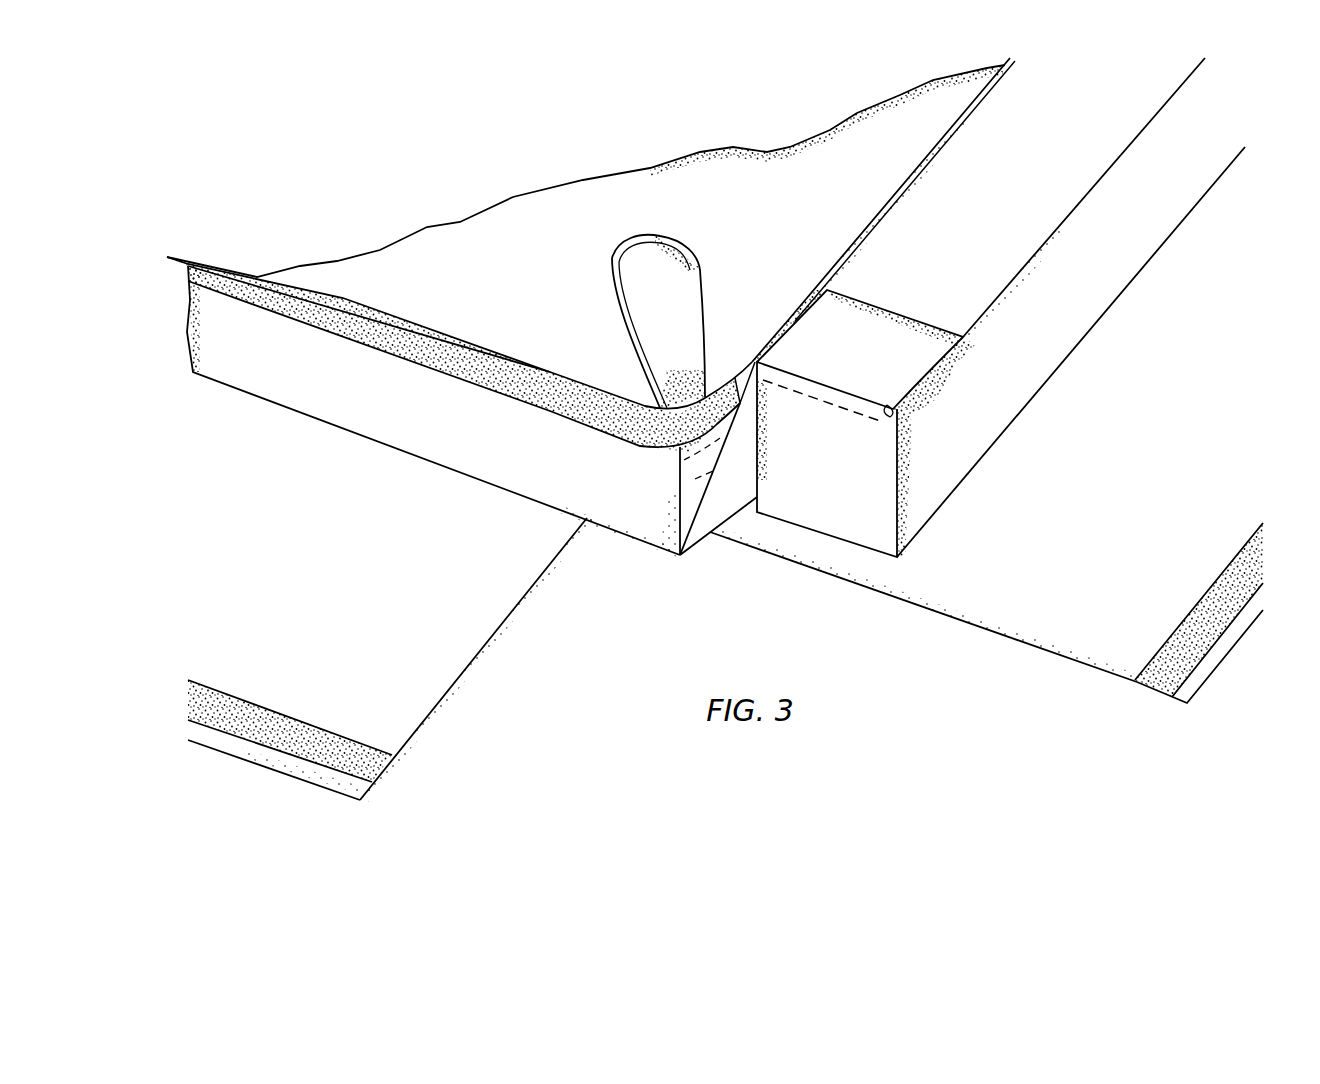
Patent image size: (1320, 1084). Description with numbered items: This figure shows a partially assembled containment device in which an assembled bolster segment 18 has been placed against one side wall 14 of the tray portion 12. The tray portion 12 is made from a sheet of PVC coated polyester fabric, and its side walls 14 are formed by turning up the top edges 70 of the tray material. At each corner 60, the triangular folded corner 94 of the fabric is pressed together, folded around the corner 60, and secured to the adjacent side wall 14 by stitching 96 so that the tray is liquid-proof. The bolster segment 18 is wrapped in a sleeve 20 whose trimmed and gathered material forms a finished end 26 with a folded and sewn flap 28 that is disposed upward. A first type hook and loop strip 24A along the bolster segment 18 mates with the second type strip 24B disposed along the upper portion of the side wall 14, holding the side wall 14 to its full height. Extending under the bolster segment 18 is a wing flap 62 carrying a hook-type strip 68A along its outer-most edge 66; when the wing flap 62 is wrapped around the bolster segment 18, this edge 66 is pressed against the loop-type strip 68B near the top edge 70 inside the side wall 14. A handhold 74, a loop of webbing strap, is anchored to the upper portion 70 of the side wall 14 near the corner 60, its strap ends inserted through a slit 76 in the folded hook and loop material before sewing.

The tray portion 12 is at (728, 220).
The side wall 14 is at (250, 378).
The bolster segment 18 is at (1040, 390).
The sleeve 20 is at (1093, 295).
The first type hook and loop fastener strip 24A is at (740, 375).
The second type hook and loop fastener strip 24B is at (402, 350).
The finished end 26 is at (823, 513).
The folded and sewn flap 28 is at (830, 398).
The corner 60 is at (680, 556).
The wing flap 62 is at (453, 688).
The outer-most edge 66 is at (252, 757).
The first type hook and loop fastener strip 68A is at (260, 707).
The second type hook and loop fastener strip 68B is at (197, 250).
The top edge 70 is at (452, 337).
The handhold 74 is at (647, 238).
The slit 76 is at (697, 380).
The folded corner 94 is at (717, 477).
The stitching 96 is at (680, 468).